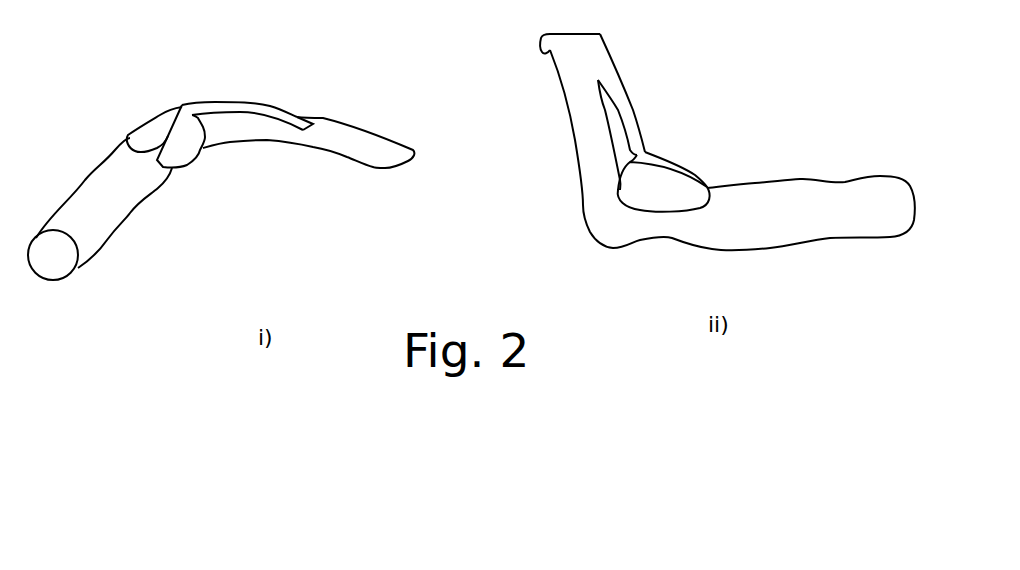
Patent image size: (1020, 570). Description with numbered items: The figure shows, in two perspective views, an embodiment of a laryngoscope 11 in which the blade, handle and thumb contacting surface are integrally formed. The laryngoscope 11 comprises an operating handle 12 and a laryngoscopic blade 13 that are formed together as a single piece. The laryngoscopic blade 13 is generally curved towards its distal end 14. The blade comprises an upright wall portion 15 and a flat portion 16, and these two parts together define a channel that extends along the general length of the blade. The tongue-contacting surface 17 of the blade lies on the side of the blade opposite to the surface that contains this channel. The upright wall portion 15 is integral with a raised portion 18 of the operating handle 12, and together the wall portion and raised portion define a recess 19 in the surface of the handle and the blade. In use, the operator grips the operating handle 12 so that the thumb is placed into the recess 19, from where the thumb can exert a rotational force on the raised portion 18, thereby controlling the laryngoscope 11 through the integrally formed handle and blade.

The laryngoscope 11 is at (145, 263).
The operating handle 12 is at (125, 213).
The laryngoscopic blade 13 is at (323, 118).
The distal end 14 is at (398, 158).
The upright wall portion 15 is at (643, 117).
The flat portion 16 is at (580, 67).
The tongue-contacting surface 17 is at (268, 143).
The raised portion 18 is at (170, 131).
The recess 19 is at (687, 185).